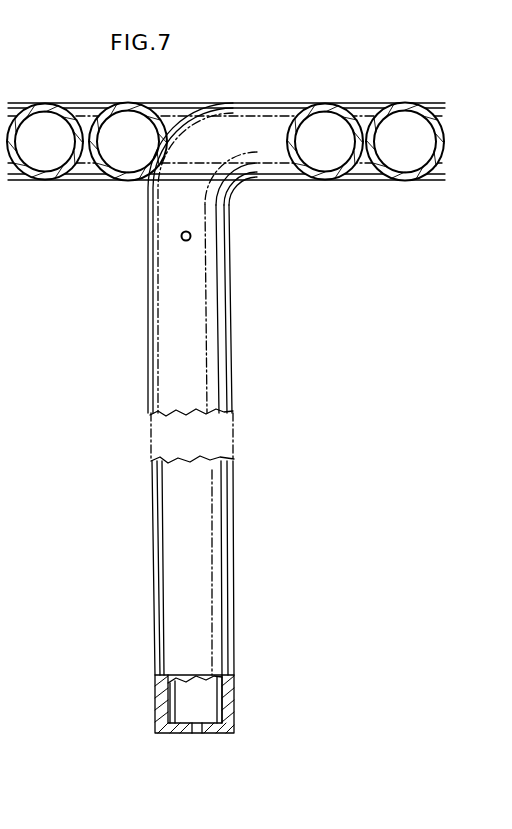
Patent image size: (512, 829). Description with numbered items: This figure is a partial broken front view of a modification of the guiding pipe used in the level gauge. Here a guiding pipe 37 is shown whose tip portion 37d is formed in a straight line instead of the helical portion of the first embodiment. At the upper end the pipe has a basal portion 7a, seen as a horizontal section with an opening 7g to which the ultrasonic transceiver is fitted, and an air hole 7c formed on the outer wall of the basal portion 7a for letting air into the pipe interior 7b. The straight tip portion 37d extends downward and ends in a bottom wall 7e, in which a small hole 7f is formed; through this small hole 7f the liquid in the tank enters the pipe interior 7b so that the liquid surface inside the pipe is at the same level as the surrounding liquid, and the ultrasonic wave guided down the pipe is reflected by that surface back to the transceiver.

The basal portion 7a is at (259, 176).
The pipe interior 7b is at (424, 153).
The air hole 7c is at (191, 236).
The bottom wall 7e is at (182, 731).
The small hole 7f is at (198, 732).
The opening 7g is at (22, 148).
The guiding pipe 37 is at (231, 287).
The tip portion 37d is at (234, 512).